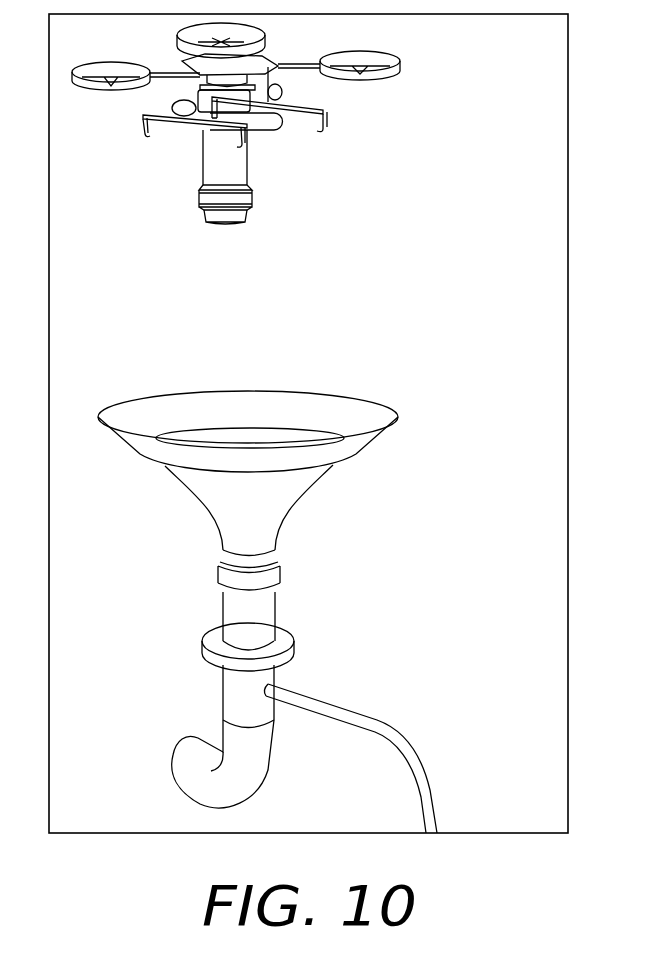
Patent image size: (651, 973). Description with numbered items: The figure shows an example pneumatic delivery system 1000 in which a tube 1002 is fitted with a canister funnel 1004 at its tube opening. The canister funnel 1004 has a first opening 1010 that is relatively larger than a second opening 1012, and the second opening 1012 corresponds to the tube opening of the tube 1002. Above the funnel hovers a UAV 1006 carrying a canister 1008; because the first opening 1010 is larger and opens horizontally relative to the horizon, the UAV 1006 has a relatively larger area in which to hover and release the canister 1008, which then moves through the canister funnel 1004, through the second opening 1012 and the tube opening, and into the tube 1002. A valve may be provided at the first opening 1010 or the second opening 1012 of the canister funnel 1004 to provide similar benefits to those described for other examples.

The pneumatic delivery system 1000 is at (392, 597).
The tube 1002 is at (260, 742).
The canister funnel 1004 is at (345, 450).
The UAV 1006 is at (400, 61).
The canister 1008 is at (236, 163).
The first opening 1010 is at (290, 412).
The second opening 1012 is at (223, 548).